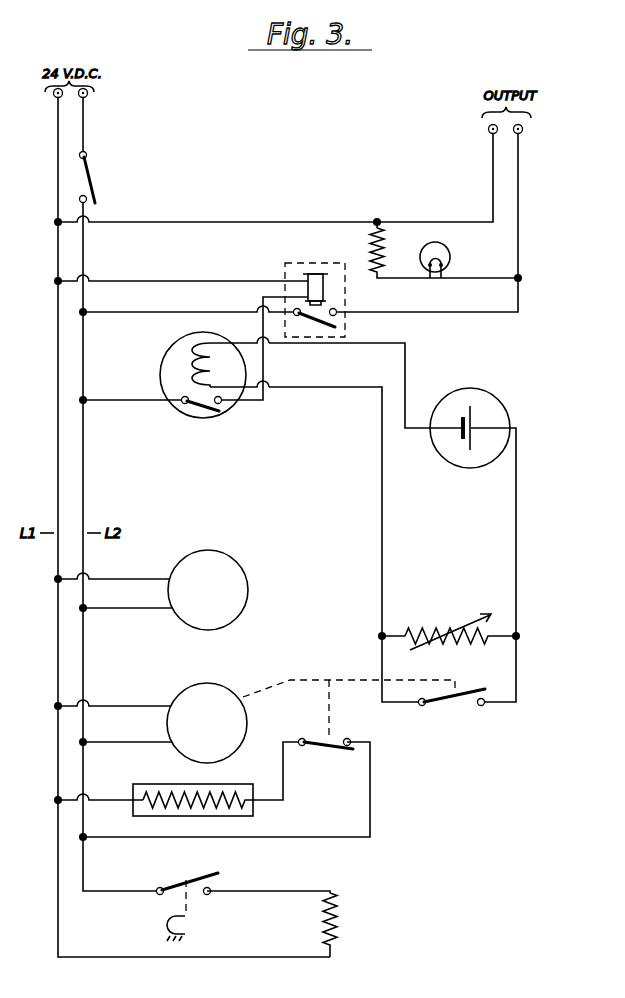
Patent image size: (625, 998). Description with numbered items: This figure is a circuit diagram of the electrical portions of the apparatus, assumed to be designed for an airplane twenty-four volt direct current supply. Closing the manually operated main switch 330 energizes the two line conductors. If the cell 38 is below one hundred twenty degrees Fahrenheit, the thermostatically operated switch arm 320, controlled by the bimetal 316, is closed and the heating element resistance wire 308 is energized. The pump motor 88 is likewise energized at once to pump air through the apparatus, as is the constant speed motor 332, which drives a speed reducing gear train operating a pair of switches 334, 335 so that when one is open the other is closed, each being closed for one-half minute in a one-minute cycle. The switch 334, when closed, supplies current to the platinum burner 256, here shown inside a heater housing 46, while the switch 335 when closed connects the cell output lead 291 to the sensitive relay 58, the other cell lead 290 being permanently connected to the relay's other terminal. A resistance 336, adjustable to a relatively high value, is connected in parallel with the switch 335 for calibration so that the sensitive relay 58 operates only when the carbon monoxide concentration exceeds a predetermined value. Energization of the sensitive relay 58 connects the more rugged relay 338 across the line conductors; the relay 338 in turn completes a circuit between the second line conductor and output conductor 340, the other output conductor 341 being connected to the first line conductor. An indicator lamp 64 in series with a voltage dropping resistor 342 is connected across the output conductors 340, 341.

The main switch 330 is at (91, 181).
The relay 338 is at (324, 284).
The voltage dropping resistor 342 is at (370, 248).
The indicator lamp 64 is at (451, 259).
The output conductor 341 is at (493, 185).
The output conductor 340 is at (518, 183).
The sensitive relay 58 is at (152, 375).
The cell lead 290 is at (405, 383).
The cell 38 is at (503, 396).
The cell output lead 291 is at (516, 493).
The pump motor 88 is at (232, 565).
The constant speed motor 332 is at (230, 668).
The heater 46 is at (164, 779).
The platinum burner 256 is at (198, 800).
The switch 334 is at (321, 748).
The resistance 336 is at (440, 626).
The switch 335 is at (462, 693).
The switch arm 320 is at (196, 880).
The bimetal 316 is at (186, 925).
The heating element resistance wire 308 is at (338, 932).